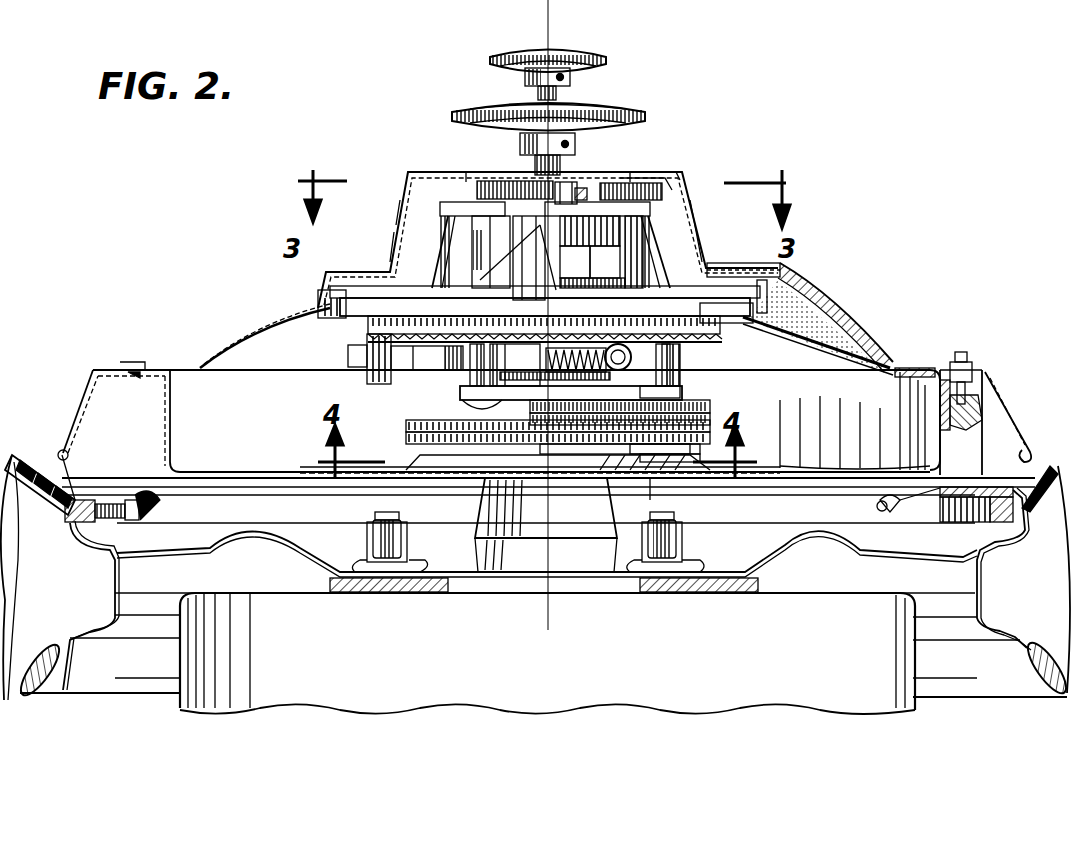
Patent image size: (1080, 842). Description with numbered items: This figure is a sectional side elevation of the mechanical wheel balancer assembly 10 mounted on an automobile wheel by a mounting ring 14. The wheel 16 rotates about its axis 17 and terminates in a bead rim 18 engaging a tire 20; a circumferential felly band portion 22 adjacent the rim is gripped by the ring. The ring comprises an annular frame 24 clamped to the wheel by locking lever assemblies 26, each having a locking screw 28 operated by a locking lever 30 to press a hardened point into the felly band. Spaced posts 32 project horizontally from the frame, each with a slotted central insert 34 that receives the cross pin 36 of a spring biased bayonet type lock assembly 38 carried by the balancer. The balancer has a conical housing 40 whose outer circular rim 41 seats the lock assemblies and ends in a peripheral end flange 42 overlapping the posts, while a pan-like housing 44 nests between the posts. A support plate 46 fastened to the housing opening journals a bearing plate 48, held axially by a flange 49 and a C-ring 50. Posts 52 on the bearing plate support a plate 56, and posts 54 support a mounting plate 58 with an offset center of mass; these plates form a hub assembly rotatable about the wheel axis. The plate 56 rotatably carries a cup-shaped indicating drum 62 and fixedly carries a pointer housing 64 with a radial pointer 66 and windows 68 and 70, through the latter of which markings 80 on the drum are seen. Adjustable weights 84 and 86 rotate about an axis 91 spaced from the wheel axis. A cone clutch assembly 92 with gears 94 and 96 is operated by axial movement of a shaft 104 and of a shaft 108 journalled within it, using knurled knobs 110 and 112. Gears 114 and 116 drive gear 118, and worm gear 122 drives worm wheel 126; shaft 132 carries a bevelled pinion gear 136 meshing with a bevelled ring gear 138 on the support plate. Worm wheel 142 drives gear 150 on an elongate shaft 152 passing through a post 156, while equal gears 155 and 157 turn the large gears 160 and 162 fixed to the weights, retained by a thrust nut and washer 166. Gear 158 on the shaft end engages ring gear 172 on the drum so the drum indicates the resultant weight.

The mechanical wheel balancer assembly 10 is at (870, 318).
The mounting ring 14 is at (128, 520).
The wheel 16 is at (766, 550).
The axis 17 is at (548, 506).
The bead rim 18 is at (66, 456).
The tire 20 is at (34, 460).
The felly band portion 22 is at (85, 548).
The annular frame 24 is at (462, 528).
The locking lever assembly 26 is at (118, 468).
The locking screw 28 is at (535, 577).
The locking lever 30 is at (138, 496).
The post 32 is at (982, 444).
The central insert 34 is at (976, 404).
The cross pin 36 is at (980, 420).
The bayonet type lock assembly 38 is at (970, 332).
The housing 40 is at (266, 338).
The outer circular rim 41 is at (194, 366).
The peripheral end flange 42 is at (84, 394).
The pan-like housing 44 is at (800, 442).
The support plate 46 is at (334, 318).
The bearing plate 48 is at (688, 294).
The flange 49 is at (680, 374).
The C-ring 50 is at (400, 296).
The posts 52 is at (547, 247).
The posts 54 is at (468, 380).
The plate 56 is at (424, 174).
The mounting plate 58 is at (504, 410).
The indicating drum 62 is at (400, 230).
The pointer housing 64 is at (408, 193).
The pointer 66 is at (826, 306).
The window 68 is at (700, 230).
The window 70 is at (660, 176).
The marking 80 is at (672, 172).
The adjustable weight 84 is at (408, 444).
The adjustable weight 86 is at (450, 422).
The axis 91 is at (652, 500).
The cone clutch assembly 92 is at (590, 178).
The gear 94 is at (571, 192).
The gear 96 is at (590, 247).
The shaft 104 is at (534, 154).
The shaft 108 is at (538, 86).
The knurled knob 110 is at (500, 50).
The knurled knob 112 is at (454, 110).
The gear 114 is at (605, 225).
The gear 116 is at (593, 267).
The gear 118 is at (508, 232).
The worm gear 122 is at (616, 380).
The worm wheel 126 is at (652, 344).
The shaft 132 is at (422, 372).
The bevelled pinion gear 136 is at (368, 380).
The bevelled ring gear 138 is at (712, 336).
The worm wheel 142 is at (548, 370).
The gear 150 is at (502, 376).
The elongate shaft 152 is at (528, 336).
The gear 155 is at (534, 440).
The post 156 is at (528, 252).
The gear 157 is at (600, 444).
The gear 158 is at (562, 184).
The large diameter gear 160 is at (708, 402).
The large gear 162 is at (708, 414).
The thrust nut and washer 166 is at (700, 462).
The ring gear 172 is at (478, 170).